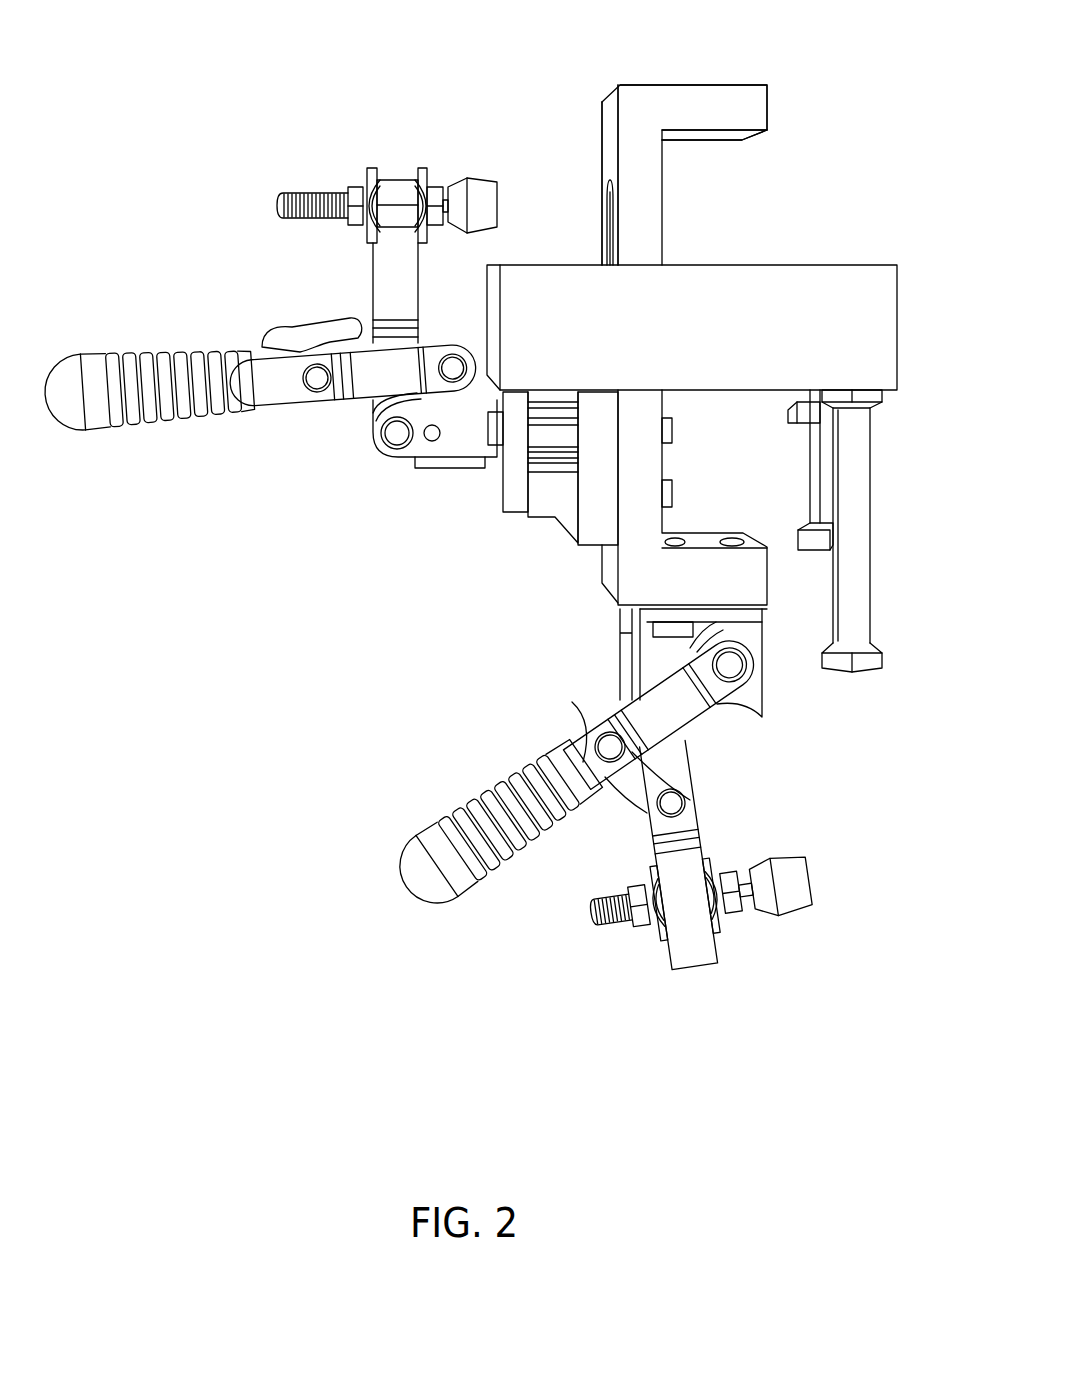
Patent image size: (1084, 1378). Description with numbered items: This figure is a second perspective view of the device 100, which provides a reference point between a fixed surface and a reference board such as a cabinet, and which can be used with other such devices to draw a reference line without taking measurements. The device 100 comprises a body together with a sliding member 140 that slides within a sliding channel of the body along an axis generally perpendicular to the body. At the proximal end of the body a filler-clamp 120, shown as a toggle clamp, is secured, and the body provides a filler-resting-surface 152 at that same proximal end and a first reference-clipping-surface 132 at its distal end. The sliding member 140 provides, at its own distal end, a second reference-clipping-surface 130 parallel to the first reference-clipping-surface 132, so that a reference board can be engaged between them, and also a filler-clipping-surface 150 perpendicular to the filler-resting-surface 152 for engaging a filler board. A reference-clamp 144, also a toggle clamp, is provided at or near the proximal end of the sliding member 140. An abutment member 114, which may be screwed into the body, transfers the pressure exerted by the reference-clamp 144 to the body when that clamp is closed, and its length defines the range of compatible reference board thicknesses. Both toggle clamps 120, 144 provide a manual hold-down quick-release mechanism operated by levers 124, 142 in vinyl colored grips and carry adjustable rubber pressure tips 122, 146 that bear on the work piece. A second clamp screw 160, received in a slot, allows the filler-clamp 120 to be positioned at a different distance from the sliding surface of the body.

The device 100 is at (192, 167).
The abutment member 114 is at (835, 543).
The filler-clamp 120 is at (288, 375).
The adjustable rubber pressure tip 122 is at (462, 175).
The lever 124 is at (132, 403).
The second reference-clipping-surface 130 is at (742, 133).
The first reference-clipping-surface 132 is at (716, 235).
The sliding member 140 is at (740, 104).
The lever 142 is at (415, 877).
The reference-clamp 144 is at (558, 750).
The adjustable rubber pressure tip 146 is at (780, 883).
The filler-clipping-surface 150 is at (613, 152).
The filler-resting-surface 152 is at (566, 254).
The second clamp screw 160 is at (547, 433).